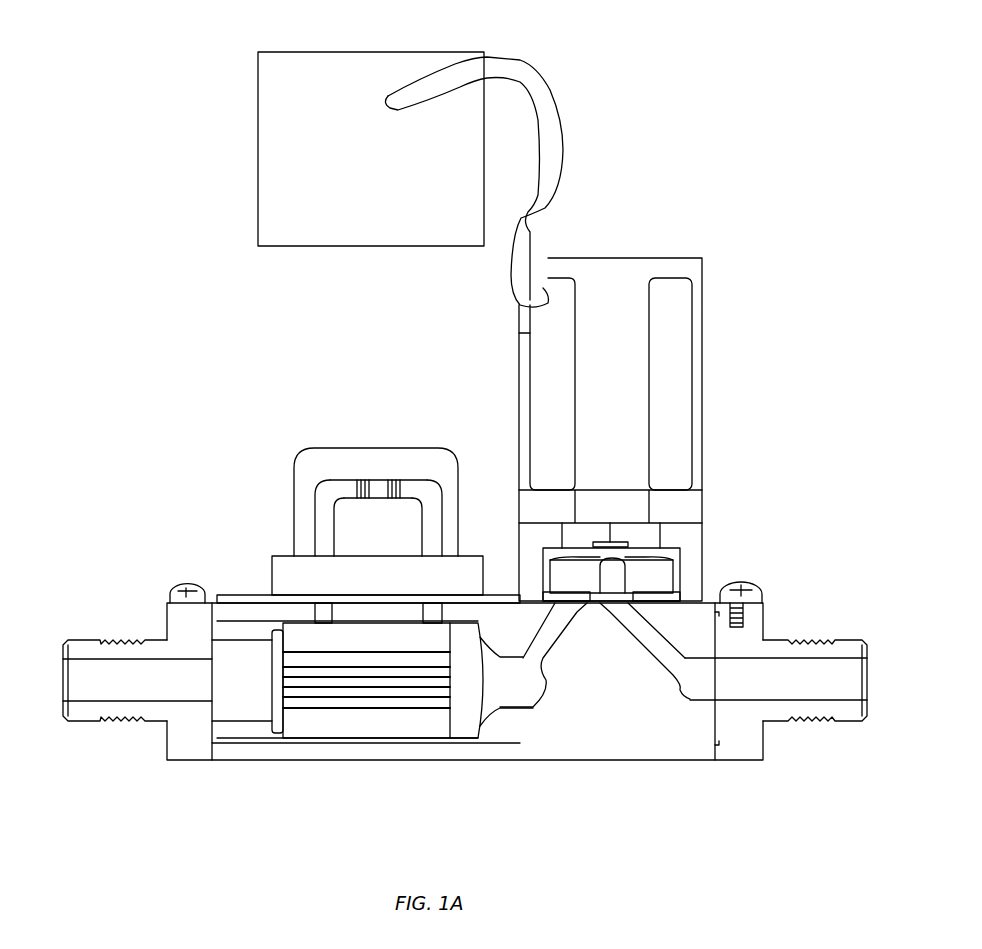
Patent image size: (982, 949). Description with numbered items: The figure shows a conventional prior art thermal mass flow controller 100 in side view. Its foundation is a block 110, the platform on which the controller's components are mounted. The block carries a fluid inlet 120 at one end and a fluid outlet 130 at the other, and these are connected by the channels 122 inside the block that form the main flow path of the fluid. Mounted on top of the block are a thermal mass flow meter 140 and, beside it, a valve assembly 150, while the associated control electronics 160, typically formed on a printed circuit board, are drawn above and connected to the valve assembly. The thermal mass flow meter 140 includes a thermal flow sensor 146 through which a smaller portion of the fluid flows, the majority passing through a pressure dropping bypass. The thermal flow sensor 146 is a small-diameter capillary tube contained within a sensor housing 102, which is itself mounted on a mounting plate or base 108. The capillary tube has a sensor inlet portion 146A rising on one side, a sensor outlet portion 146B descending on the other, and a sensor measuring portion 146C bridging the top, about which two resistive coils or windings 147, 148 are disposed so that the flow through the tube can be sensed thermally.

The thermal mass flow controller 100 is at (190, 137).
The sensor housing 102 is at (294, 493).
The mounting plate or base 108 is at (272, 578).
The block 110 is at (605, 752).
The fluid inlet 120 is at (75, 682).
The channels 122 is at (640, 632).
The fluid outlet 130 is at (855, 678).
The thermal mass flow meter 140 is at (215, 398).
The thermal flow sensor 146 is at (407, 456).
The sensor inlet portion 146A is at (322, 545).
The sensor outlet portion 146B is at (433, 528).
The sensor measuring portion 146C is at (378, 487).
The resistive coil 147 is at (360, 487).
The resistive coil 148 is at (400, 487).
The valve assembly 150 is at (650, 258).
The control electronics 160 is at (307, 52).